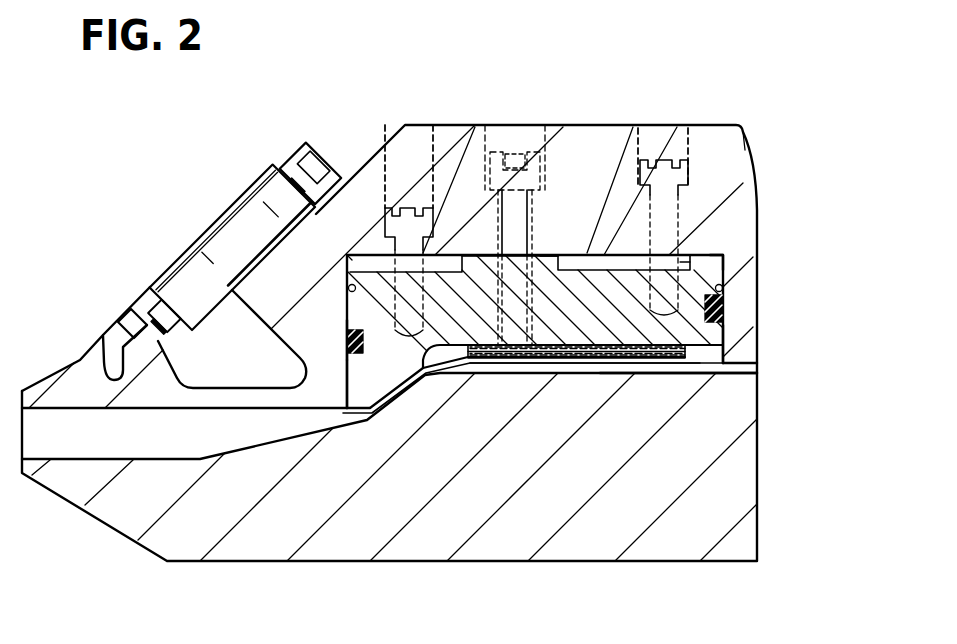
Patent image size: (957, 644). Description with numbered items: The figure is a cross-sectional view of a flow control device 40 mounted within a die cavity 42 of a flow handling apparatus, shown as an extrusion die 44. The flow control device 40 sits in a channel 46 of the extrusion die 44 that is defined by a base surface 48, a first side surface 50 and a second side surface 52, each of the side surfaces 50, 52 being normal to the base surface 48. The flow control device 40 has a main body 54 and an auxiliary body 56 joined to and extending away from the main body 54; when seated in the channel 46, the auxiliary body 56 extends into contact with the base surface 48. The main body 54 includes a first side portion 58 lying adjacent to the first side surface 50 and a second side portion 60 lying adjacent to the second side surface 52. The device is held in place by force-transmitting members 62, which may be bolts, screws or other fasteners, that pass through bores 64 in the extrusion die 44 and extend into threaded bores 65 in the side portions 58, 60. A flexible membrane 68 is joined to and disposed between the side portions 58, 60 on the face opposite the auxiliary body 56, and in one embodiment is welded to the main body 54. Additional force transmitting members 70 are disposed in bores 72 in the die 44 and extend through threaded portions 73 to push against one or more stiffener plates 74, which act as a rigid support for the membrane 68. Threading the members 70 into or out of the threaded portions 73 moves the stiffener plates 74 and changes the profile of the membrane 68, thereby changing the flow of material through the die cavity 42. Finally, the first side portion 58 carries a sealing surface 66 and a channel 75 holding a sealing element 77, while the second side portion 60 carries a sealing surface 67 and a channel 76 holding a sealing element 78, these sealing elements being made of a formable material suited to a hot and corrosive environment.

The flow control device 40 is at (352, 415).
The die cavity 42 is at (505, 367).
The extrusion die 44 is at (360, 150).
The channel 46 is at (724, 257).
The base surface 48 is at (690, 253).
The first side surface 50 is at (347, 277).
The second side surface 52 is at (707, 284).
The main body 54 is at (478, 267).
The auxiliary body 56 is at (547, 255).
The first side portion 58 is at (347, 300).
The second side portion 60 is at (705, 280).
The force-transmitting members 62 is at (403, 125).
The bores 64 is at (425, 126).
The threaded bores 65 is at (347, 254).
The sealing surface 66 is at (345, 377).
The sealing surface 67 is at (727, 328).
The flexible membrane 68 is at (663, 362).
The force transmitting members 70 is at (518, 148).
The bores 72 is at (545, 127).
The threaded portions 73 is at (514, 145).
The stiffener plates 74 is at (578, 362).
The channel 75 is at (347, 341).
The channel 76 is at (724, 311).
The sealing element 77 is at (347, 335).
The sealing element 78 is at (743, 357).